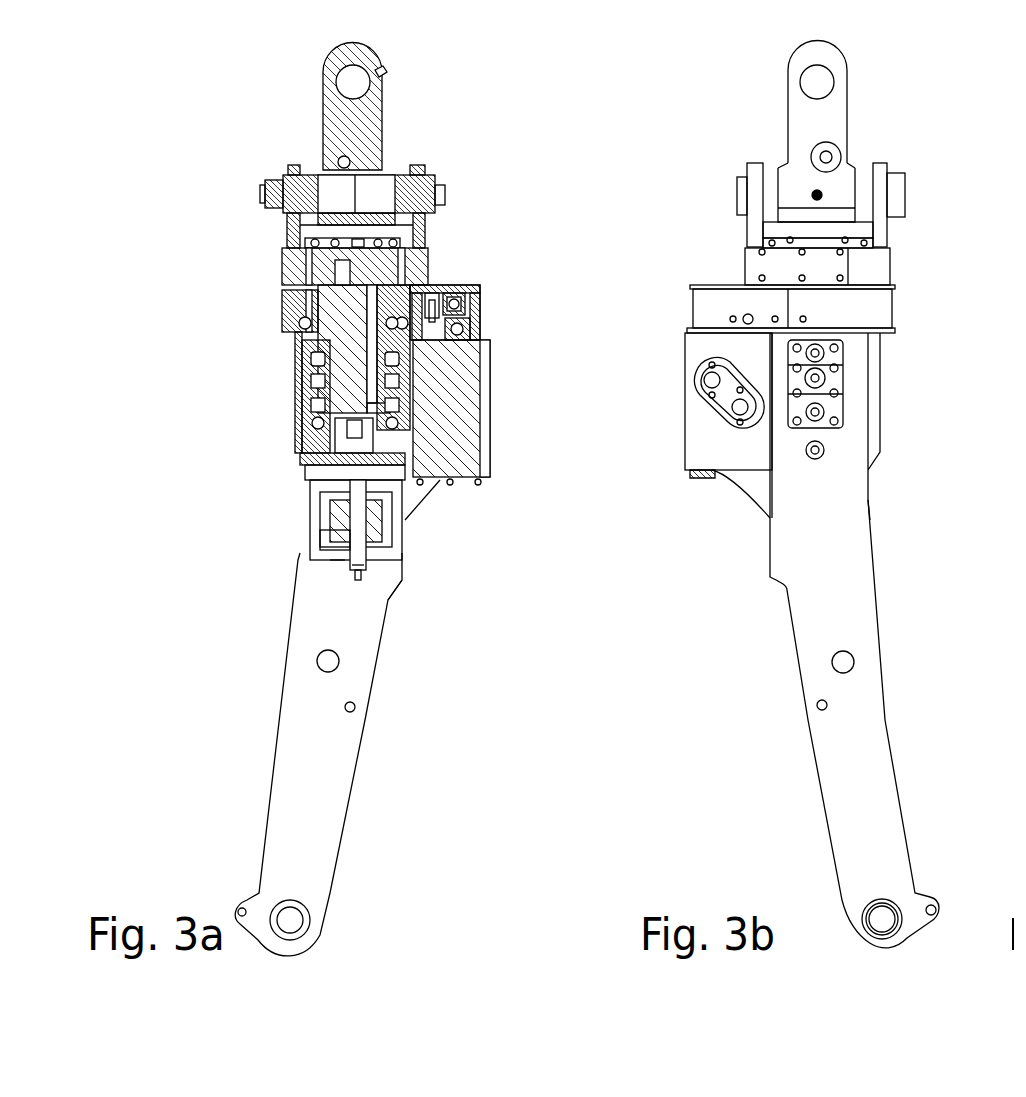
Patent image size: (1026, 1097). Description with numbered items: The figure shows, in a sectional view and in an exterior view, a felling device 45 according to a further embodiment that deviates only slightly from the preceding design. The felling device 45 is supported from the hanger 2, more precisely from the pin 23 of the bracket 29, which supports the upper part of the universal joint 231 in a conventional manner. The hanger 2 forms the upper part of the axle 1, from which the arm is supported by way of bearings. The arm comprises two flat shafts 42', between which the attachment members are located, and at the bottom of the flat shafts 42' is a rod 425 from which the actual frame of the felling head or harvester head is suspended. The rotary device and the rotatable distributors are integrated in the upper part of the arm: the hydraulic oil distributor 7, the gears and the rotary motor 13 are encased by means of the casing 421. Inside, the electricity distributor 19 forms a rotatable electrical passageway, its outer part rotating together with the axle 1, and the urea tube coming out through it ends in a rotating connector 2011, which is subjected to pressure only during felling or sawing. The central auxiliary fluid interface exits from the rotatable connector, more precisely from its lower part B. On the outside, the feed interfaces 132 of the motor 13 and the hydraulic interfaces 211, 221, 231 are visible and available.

In FIG. 3A, the universal joint 231 is at (388, 125).
In FIG. 3B, the universal joint 231 is at (825, 125).
In FIG. 3A, the pin 23 is at (435, 208).
In FIG. 3A, the hanger 2 is at (425, 259).
In FIG. 3B, the hanger 2 is at (873, 262).
In FIG. 3A, the casing 421 is at (480, 301).
In FIG. 3B, the casing 421 is at (878, 302).
In FIG. 3A, the axle 1 is at (352, 319).
In FIG. 3A, the rotary motor 13 is at (464, 414).
In FIG. 3A, the hydraulic oil distributor 7 is at (297, 375).
In FIG. 3A, the electricity distributor 19 is at (335, 545).
In FIG. 3A, the rotating connector 2011 is at (337, 565).
In FIG. 3A, the lower part of rotatable connector B is at (355, 565).
In FIG. 3A, the felling device 45 is at (420, 591).
In FIG. 3B, the felling device 45 is at (888, 594).
In FIG. 3A, the flat shafts 42' is at (318, 754).
In FIG. 3B, the flat shafts 42' is at (854, 640).
In FIG. 3A, the rod 425 is at (306, 914).
In FIG. 3B, the rod 425 is at (875, 905).
In FIG. 3B, the bracket 29 is at (880, 225).
In FIG. 3B, the hydraulic interface 211 is at (850, 378).
In FIG. 3B, the hydraulic interface 221 is at (852, 410).
In FIG. 3B, the feed interfaces 132 is at (708, 420).